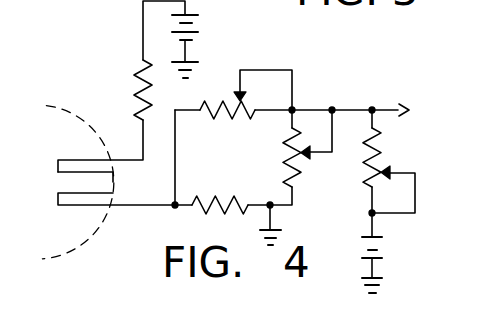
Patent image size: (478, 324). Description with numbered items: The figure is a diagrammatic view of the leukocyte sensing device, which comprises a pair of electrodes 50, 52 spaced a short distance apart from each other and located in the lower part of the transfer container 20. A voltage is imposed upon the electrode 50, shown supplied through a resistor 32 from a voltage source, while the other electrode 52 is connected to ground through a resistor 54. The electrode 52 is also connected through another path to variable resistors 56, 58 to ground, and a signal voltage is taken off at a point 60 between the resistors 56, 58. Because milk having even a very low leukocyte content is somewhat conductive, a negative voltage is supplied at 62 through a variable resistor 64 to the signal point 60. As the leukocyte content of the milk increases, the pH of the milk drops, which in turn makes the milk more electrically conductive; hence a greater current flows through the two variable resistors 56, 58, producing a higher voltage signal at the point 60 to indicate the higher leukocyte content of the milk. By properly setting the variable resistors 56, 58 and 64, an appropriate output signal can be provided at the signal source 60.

The transfer container 20 is at (85, 249).
The resistor 32 is at (98, 84).
The electrode 50 is at (50, 176).
The electrode 52 is at (50, 190).
The resistor 54 is at (222, 196).
The variable resistor 56 is at (209, 103).
The variable resistor 58 is at (302, 178).
The signal point 60 is at (296, 108).
The negative voltage supply point 62 is at (374, 108).
The variable resistor 64 is at (383, 151).